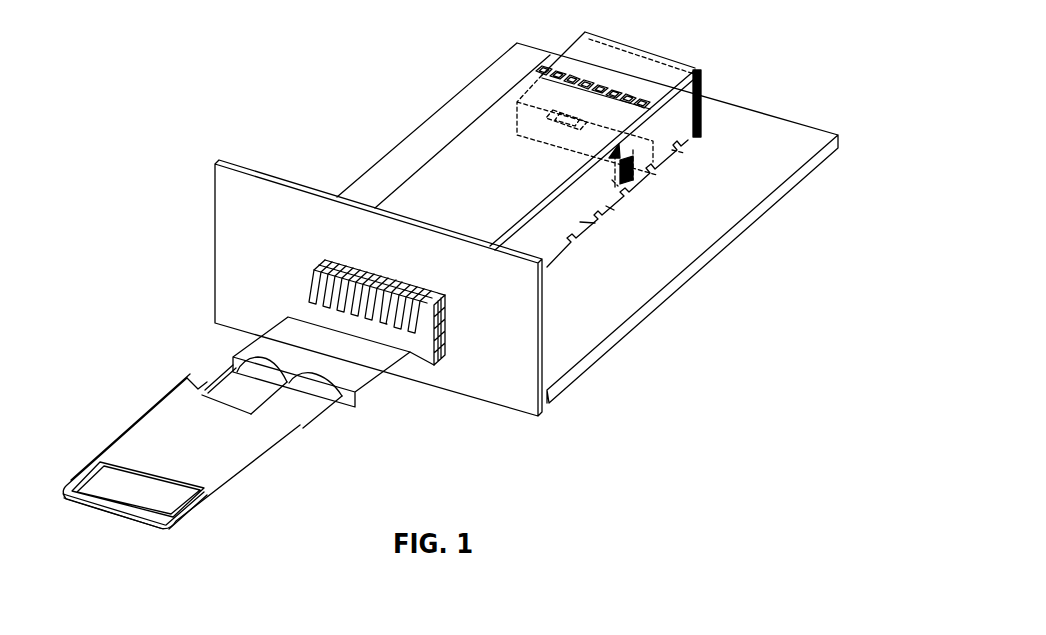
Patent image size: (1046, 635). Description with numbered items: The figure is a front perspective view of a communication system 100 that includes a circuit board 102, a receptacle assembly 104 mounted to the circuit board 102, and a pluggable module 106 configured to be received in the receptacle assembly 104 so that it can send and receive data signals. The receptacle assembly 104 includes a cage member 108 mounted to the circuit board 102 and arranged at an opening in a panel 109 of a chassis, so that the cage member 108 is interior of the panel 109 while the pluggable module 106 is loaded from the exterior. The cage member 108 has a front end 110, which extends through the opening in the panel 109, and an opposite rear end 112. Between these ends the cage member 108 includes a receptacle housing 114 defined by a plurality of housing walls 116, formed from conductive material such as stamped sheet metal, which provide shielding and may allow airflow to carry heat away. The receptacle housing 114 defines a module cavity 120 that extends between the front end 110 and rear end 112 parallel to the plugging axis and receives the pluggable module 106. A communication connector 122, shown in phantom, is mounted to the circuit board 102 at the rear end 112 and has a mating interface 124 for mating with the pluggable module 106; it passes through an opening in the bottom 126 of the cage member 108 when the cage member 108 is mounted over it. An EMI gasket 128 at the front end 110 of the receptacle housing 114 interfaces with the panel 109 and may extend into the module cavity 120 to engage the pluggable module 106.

The communication system 100 is at (342, 50).
The circuit board 102 is at (772, 128).
The receptacle assembly 104 is at (649, 94).
The pluggable module 106 is at (260, 364).
The cage member 108 is at (652, 73).
The panel 109 is at (506, 392).
The front end 110 is at (416, 372).
The rear end 112 is at (707, 88).
The receptacle housing 114 is at (595, 223).
The walls 116 is at (487, 142).
The module cavity 120 is at (412, 360).
The communication connector 122 is at (680, 152).
The mating interface 124 is at (615, 185).
The bottom 126 is at (612, 208).
The EMI gasket 128 is at (315, 252).